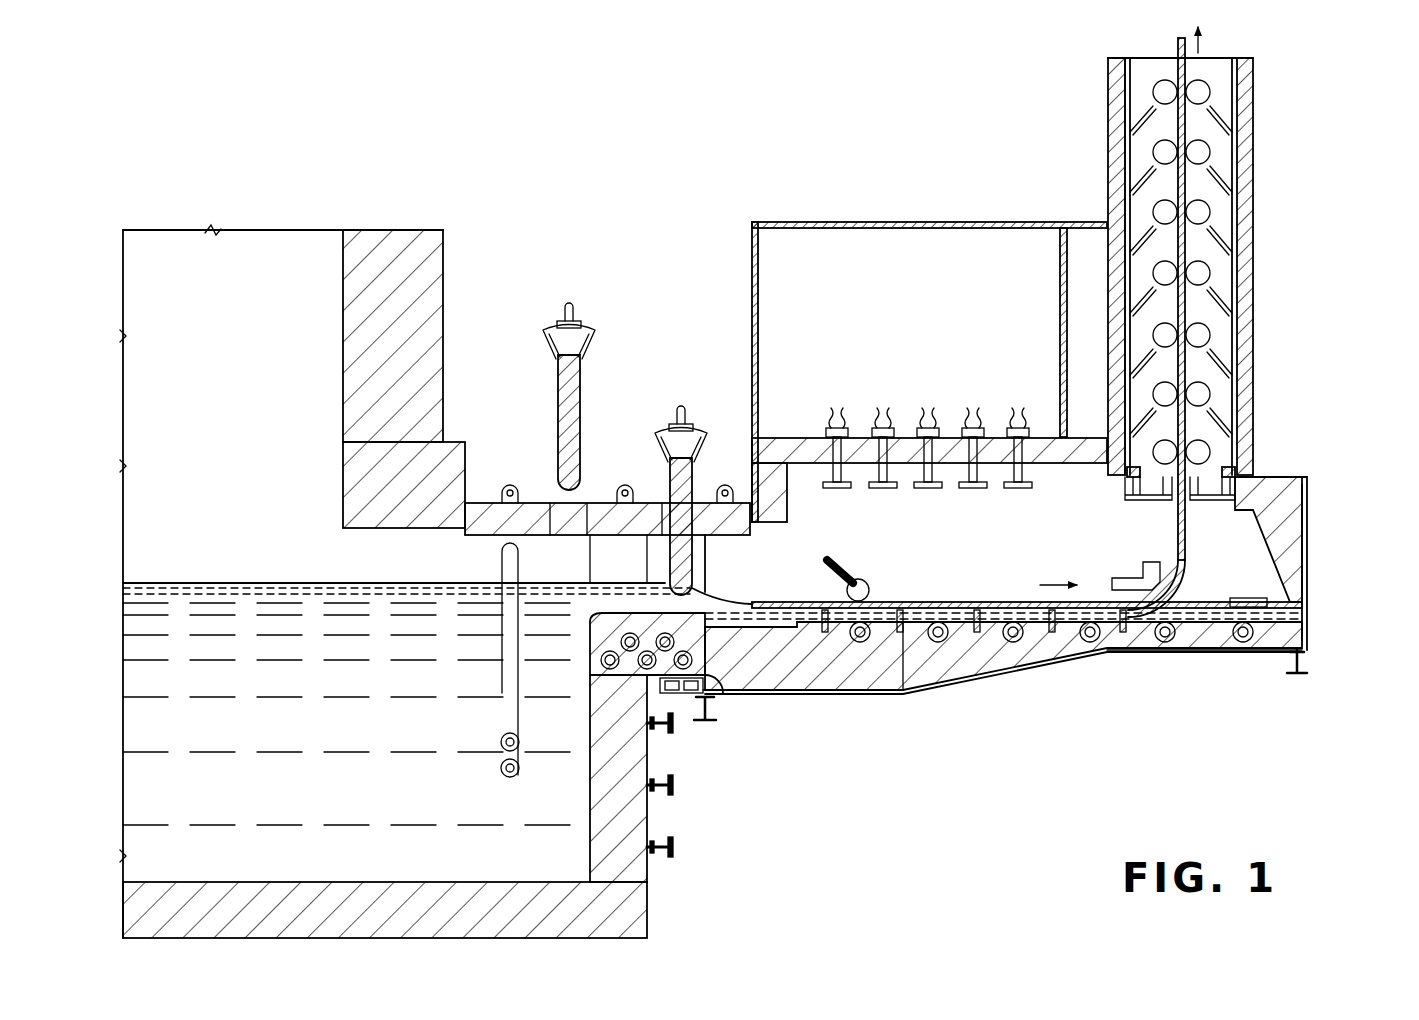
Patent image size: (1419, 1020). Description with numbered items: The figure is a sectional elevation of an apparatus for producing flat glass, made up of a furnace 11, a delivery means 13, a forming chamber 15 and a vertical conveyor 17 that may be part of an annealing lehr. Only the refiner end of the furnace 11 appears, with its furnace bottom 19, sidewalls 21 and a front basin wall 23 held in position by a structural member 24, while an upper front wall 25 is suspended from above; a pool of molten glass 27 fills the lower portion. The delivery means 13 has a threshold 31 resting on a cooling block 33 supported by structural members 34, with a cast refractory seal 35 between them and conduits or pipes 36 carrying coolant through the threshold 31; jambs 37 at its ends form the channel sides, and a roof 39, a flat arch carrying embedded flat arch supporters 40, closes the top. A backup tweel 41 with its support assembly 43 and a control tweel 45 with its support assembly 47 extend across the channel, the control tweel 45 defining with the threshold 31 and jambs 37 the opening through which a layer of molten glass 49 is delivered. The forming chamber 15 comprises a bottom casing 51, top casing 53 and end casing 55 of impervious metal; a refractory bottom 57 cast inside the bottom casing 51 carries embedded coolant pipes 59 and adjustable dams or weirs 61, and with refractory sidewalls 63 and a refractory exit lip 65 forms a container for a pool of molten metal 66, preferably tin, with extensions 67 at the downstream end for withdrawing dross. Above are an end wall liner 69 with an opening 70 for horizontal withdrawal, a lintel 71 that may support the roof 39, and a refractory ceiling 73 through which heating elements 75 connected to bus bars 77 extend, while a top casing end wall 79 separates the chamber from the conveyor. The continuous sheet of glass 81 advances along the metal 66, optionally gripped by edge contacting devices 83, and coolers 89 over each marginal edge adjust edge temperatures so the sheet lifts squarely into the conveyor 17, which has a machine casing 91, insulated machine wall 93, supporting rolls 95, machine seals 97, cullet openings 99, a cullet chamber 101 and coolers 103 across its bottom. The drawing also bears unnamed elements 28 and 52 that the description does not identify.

The furnace 11 is at (462, 250).
The delivery means 13 is at (656, 282).
The forming chamber 15 is at (946, 205).
The vertical conveyor 17 is at (1088, 120).
The furnace bottom 19 is at (330, 935).
The sidewalls 21 is at (231, 464).
The front basin wall 23 is at (648, 820).
The structural member 24 is at (690, 860).
The upper front wall 25 is at (443, 326).
The pool of molten glass 27 is at (326, 798).
The cooling tube 28 is at (500, 735).
The threshold 31 is at (615, 672).
The cooling block 33 is at (672, 698).
The structural members 34 is at (712, 700).
The cast refractory seal 35 is at (720, 690).
The conduits or pipes 36 is at (625, 638).
The jambs 37 is at (707, 566).
The roof 39 is at (533, 535).
The flat arch supporters 40 is at (510, 485).
The backup tweel 41 is at (580, 395).
The support assembly 43 is at (588, 333).
The control tweel 45 is at (692, 478).
The support assembly 47 is at (695, 428).
The layer of molten glass 49 is at (700, 596).
The bottom casing 51 is at (990, 672).
The support leg 52 is at (1307, 670).
The top casing 53 is at (752, 258).
The end casing 55 is at (1307, 502).
The refractory bottom 57 is at (1000, 660).
The pipes 59 is at (1100, 645).
The dams or weirs 61 is at (903, 690).
The refractory sidewalls 63 is at (825, 592).
The refractory exit lip 65 is at (1307, 624).
The pool of molten metal 66 is at (1218, 650).
The extensions 67 is at (1247, 598).
The end wall liner 69 is at (1268, 540).
The opening 70 is at (1307, 564).
The lintel 71 is at (787, 512).
The ceiling or roof 73 is at (1050, 468).
The heating elements 75 is at (893, 490).
The bus bars 77 is at (935, 428).
The top casing end wall 79 is at (1060, 316).
The continuous sheet of glass 81 is at (1027, 600).
The edge contacting devices 83 is at (846, 570).
The coolers 89 is at (1130, 575).
The machine casing 91 is at (1253, 384).
The machine wall 93 is at (1253, 264).
The supporting rolls 95 is at (1165, 80).
The machine seals 97 is at (1240, 320).
The openings 99 is at (1108, 300).
The cullet chamber 101 is at (1098, 358).
The coolers 103 is at (1155, 500).